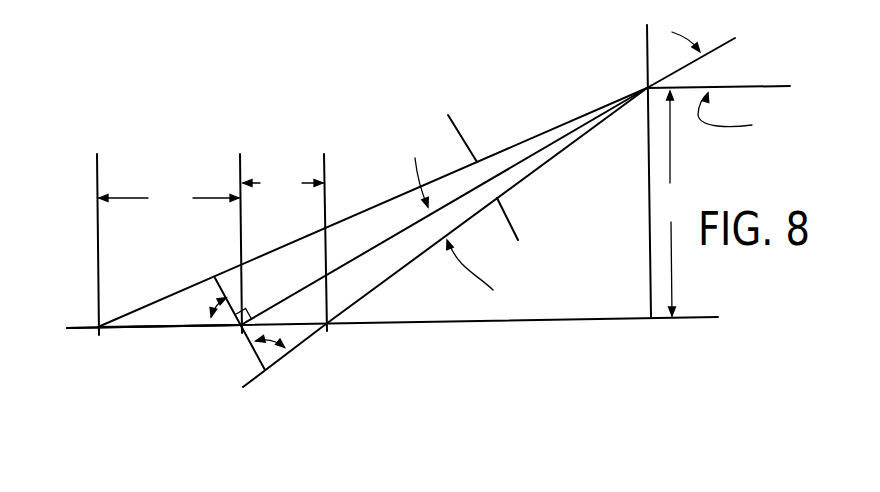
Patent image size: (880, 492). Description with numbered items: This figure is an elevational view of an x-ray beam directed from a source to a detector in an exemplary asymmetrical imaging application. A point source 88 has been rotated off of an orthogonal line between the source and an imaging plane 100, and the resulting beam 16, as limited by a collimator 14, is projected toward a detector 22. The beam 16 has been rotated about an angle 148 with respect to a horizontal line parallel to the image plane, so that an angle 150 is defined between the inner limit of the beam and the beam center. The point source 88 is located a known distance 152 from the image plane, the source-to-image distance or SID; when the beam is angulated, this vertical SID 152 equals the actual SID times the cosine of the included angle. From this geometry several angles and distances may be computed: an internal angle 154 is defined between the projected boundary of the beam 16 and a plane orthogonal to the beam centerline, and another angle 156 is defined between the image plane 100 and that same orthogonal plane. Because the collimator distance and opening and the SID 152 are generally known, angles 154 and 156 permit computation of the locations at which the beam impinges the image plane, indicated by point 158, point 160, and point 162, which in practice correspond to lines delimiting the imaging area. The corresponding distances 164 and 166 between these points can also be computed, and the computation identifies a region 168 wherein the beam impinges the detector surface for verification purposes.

The collimator 14 is at (465, 138).
The beam 16 is at (553, 158).
The detector 22 is at (150, 333).
The point source 88 is at (645, 87).
The imaging plane 100 is at (393, 325).
The angle 148 is at (745, 117).
The angle 150 is at (467, 272).
The distance 152 is at (674, 203).
The internal angle 154 is at (270, 357).
The angle 156 is at (223, 315).
The point 158 is at (330, 328).
The point 160 is at (240, 333).
The point 162 is at (96, 325).
The distance 164 is at (443, 210).
The distance 166 is at (169, 200).
The region 168 is at (173, 318).